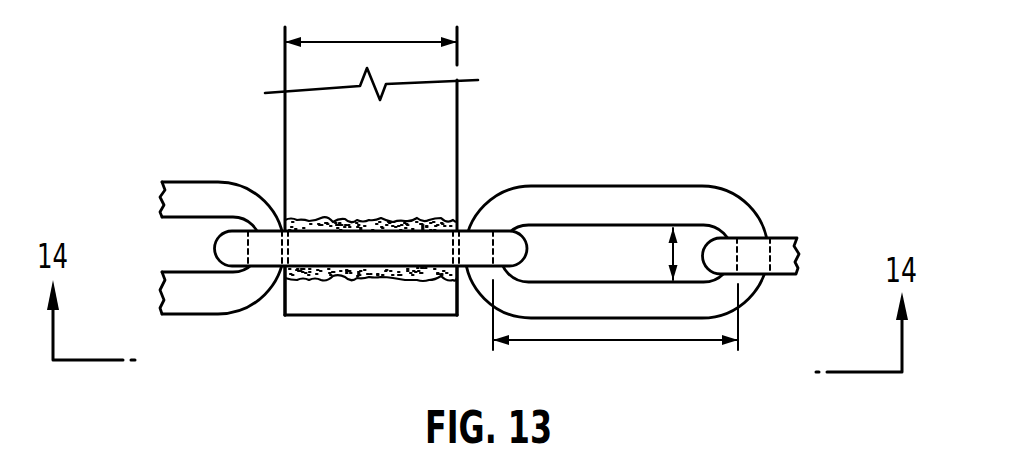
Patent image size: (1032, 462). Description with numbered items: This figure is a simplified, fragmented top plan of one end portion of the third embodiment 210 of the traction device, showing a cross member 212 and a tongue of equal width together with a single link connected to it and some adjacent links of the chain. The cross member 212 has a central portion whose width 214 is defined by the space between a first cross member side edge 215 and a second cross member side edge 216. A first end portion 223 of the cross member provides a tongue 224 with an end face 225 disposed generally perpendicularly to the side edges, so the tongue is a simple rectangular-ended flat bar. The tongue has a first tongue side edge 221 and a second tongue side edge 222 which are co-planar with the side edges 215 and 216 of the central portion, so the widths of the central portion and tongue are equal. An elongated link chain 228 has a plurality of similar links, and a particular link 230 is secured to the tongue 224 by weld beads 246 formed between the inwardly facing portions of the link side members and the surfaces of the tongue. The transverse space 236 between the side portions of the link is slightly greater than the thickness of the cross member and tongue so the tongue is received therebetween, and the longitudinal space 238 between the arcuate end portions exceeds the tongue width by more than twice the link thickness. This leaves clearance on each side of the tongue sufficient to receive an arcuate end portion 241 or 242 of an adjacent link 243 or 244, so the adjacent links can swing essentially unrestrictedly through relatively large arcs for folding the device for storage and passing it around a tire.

The third embodiment 210 is at (187, 219).
The cross member 212 is at (187, 246).
The width 214 is at (373, 39).
The first cross member side edge 215 is at (284, 118).
The second cross member side edge 216 is at (458, 108).
The first tongue side edge 221 is at (284, 298).
The second tongue side edge 222 is at (458, 302).
The first end portion 223 is at (616, 224).
The tongue 224 is at (616, 252).
The end face 225 is at (348, 316).
The elongated link chain 228 is at (783, 204).
The link 230 is at (387, 246).
The transverse space 236 is at (671, 232).
The longitudinal space 238 is at (632, 343).
The arcuate end portion 241 is at (262, 277).
The arcuate end portion 242 is at (487, 232).
The adjacent link 243 is at (184, 197).
The adjacent link 244 is at (750, 227).
The weld beads 246 is at (333, 225).